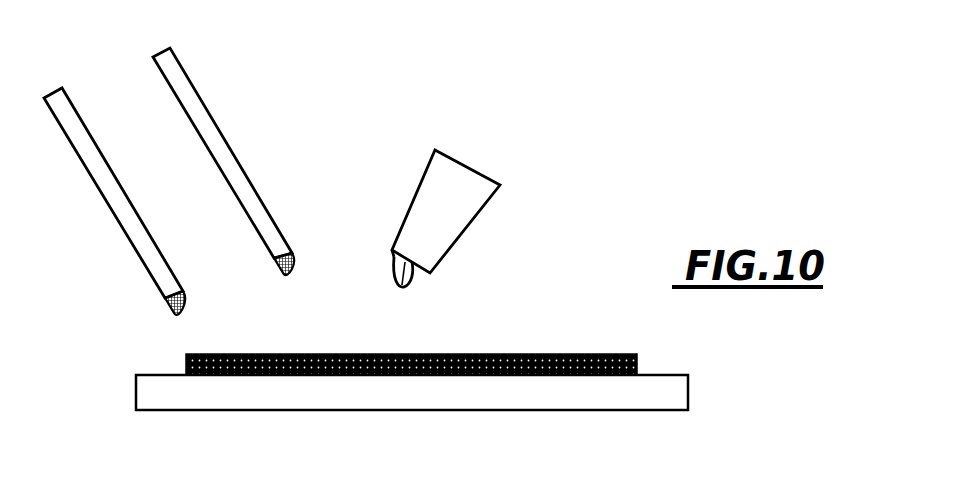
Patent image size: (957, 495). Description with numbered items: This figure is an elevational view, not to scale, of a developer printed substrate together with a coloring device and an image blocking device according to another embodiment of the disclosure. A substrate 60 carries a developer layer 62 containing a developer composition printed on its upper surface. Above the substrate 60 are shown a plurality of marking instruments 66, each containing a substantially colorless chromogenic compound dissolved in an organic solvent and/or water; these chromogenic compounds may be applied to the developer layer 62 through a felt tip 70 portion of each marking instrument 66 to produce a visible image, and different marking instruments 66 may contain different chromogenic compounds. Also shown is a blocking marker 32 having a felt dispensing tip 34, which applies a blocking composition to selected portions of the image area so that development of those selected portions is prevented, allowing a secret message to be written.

The blocking marker 32 is at (466, 216).
The felt dispensing tip 34 is at (398, 272).
The substrate 60 is at (461, 406).
The developer layer 62 is at (562, 353).
The marking instrument 66 is at (252, 152).
The felt tip 70 is at (168, 311).